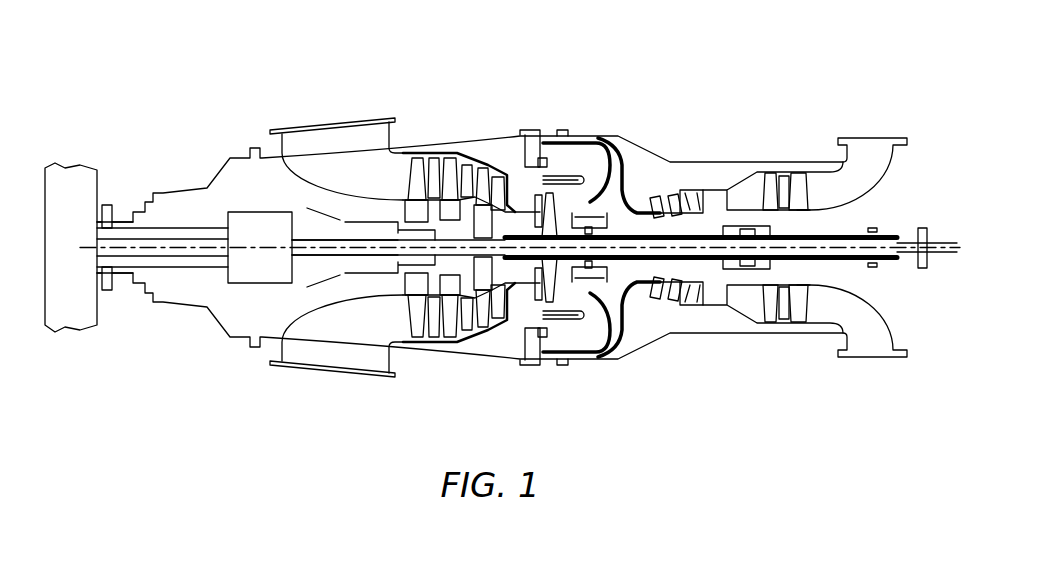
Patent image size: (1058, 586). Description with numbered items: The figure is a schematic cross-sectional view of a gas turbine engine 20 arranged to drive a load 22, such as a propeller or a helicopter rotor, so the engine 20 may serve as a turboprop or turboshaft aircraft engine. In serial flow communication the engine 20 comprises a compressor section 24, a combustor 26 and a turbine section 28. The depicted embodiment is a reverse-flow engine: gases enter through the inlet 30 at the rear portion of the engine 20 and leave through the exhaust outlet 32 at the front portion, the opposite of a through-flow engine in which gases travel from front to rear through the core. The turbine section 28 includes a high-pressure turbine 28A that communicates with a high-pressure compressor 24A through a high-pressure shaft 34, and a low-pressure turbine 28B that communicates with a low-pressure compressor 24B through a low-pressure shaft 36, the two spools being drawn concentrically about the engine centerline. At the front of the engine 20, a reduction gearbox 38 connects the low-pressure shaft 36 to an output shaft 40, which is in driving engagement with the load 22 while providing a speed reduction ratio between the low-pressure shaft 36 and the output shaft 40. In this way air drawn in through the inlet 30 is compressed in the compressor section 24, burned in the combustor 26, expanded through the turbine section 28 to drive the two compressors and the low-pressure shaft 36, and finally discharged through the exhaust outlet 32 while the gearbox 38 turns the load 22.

The gas turbine engine 20 is at (684, 77).
The load 22 is at (70, 312).
The compressor section 24 is at (718, 336).
The high-pressure compressor 24A is at (693, 313).
The low-pressure compressor 24B is at (797, 307).
The combustor 26 is at (578, 152).
The turbine section 28 is at (500, 358).
The high-pressure turbine 28A is at (552, 265).
The low-pressure turbine 28B is at (447, 340).
The inlet 30 is at (869, 118).
The exhaust outlet 32 is at (324, 110).
The high-pressure shaft 34 is at (630, 216).
The low-pressure shaft 36 is at (343, 223).
The reduction gearbox 38 is at (252, 284).
The output shaft 40 is at (163, 270).